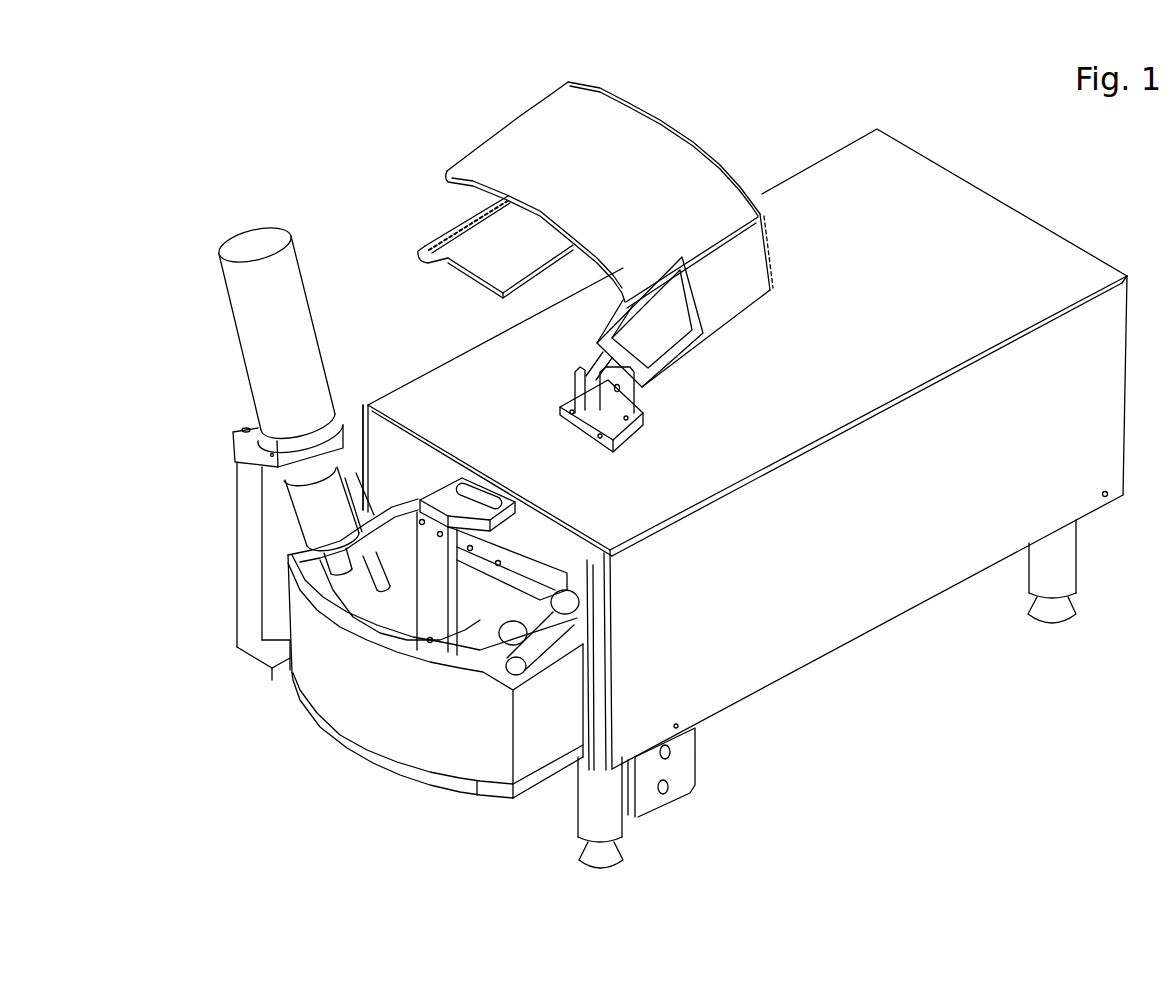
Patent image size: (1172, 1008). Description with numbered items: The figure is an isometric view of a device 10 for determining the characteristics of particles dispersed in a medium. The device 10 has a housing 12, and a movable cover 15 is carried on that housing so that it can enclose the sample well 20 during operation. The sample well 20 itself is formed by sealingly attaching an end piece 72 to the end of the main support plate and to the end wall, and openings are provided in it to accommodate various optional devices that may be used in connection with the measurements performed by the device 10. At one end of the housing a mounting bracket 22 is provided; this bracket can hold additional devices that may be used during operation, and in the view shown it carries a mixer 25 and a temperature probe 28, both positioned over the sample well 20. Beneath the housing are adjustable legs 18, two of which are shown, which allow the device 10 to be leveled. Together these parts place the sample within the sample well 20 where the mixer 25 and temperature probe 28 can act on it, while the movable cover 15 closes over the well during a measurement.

The device 10 is at (1011, 742).
The housing 12 is at (745, 449).
The movable cover 15 is at (595, 262).
The adjustable legs 18 is at (871, 706).
The sample well 20 is at (435, 701).
The mounting bracket 22 is at (274, 552).
The mixer 25 is at (294, 398).
The temperature probe 28 is at (400, 412).
The end piece 72 is at (508, 700).